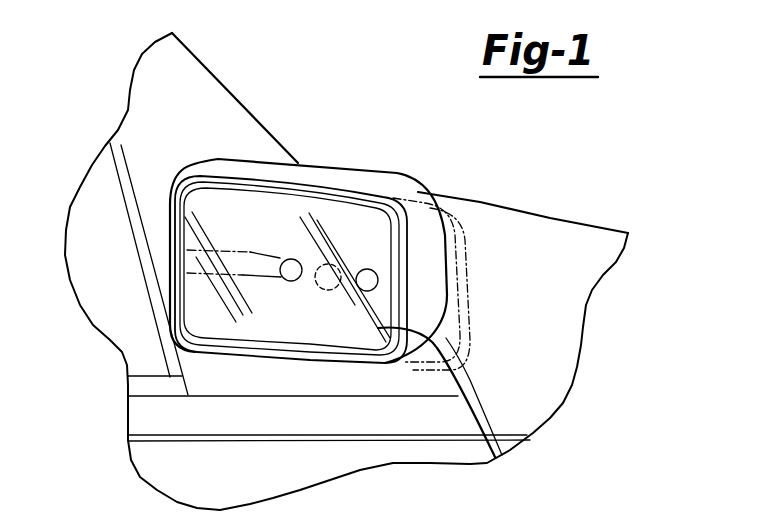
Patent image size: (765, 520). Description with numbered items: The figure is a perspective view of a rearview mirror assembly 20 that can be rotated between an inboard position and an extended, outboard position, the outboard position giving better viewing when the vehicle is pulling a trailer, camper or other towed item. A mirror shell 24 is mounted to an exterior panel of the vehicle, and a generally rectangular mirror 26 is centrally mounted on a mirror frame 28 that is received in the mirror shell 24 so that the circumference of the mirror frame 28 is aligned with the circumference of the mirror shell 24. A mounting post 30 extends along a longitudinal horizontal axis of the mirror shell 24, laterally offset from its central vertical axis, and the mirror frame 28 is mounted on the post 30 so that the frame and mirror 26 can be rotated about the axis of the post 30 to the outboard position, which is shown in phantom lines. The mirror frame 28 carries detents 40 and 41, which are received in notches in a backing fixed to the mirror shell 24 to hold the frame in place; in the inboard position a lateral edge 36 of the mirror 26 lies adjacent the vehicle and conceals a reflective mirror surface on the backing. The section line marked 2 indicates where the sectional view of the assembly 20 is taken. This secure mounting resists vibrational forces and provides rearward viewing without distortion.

The rearview mirror assembly 20 is at (437, 170).
The mirror shell 24 is at (432, 254).
The mirror 26 is at (346, 340).
The mirror frame 28 is at (445, 372).
The mounting post 30 is at (325, 272).
The lateral edge 36 is at (207, 320).
The detent 40 is at (367, 270).
The detent 41 is at (286, 260).
The section line 2- 2 is at (170, 258).